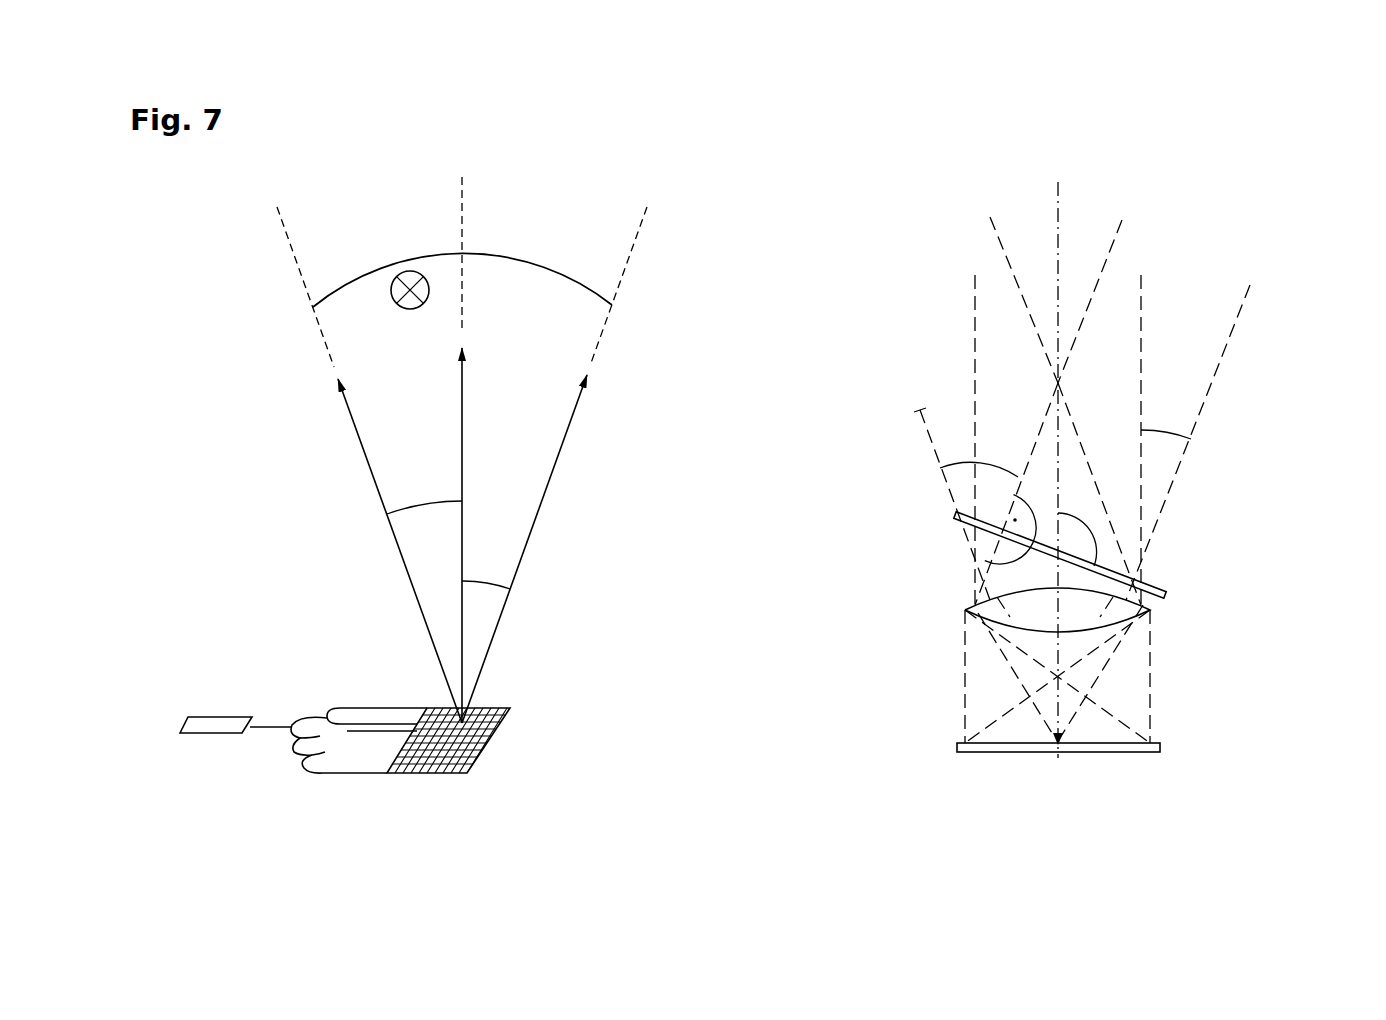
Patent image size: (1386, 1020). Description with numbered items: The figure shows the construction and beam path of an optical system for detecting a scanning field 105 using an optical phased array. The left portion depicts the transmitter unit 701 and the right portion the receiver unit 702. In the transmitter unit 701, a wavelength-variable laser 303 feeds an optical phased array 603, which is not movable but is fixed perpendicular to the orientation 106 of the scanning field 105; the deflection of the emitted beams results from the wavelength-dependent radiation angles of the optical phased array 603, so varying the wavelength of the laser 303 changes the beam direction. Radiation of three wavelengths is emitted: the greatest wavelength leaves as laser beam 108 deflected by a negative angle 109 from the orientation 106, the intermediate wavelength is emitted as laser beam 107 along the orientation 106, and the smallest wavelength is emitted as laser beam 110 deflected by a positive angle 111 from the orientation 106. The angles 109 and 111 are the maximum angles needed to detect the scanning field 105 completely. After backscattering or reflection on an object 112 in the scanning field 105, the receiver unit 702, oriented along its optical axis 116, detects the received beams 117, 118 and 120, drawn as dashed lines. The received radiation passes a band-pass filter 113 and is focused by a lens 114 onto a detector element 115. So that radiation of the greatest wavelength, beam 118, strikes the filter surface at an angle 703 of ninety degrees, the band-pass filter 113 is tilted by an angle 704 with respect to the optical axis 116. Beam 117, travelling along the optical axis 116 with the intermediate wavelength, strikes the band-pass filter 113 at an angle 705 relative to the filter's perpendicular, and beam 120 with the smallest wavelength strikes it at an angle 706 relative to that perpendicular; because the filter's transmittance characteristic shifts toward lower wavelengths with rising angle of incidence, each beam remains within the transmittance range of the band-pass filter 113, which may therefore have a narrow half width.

The transmitter unit 701 is at (245, 262).
The receiver unit 702 is at (843, 262).
The scanning field 105 is at (567, 297).
The orientation of scanning field 106 is at (462, 192).
The laser beam 107 is at (462, 405).
The laser beam 108 is at (547, 502).
The negative angle 109 is at (485, 623).
The laser beam 110 is at (348, 412).
The positive angle 111 is at (405, 532).
The object 112 is at (412, 271).
The band-pass filter 113 is at (1155, 582).
The lens 114 is at (1150, 607).
The detector element 115 is at (1160, 747).
The optical axis 116 is at (1058, 193).
The received beam 117 is at (1177, 308).
The received beam 118 is at (1122, 223).
The received beam 120 is at (918, 412).
The wavelength-variable laser 303 is at (208, 737).
The optical phased array 603 is at (483, 742).
The angle of incidence 703 is at (982, 568).
The tilt angle 704 is at (1097, 528).
The angle of incidence 705 is at (1163, 472).
The angle of incidence 706 is at (968, 490).